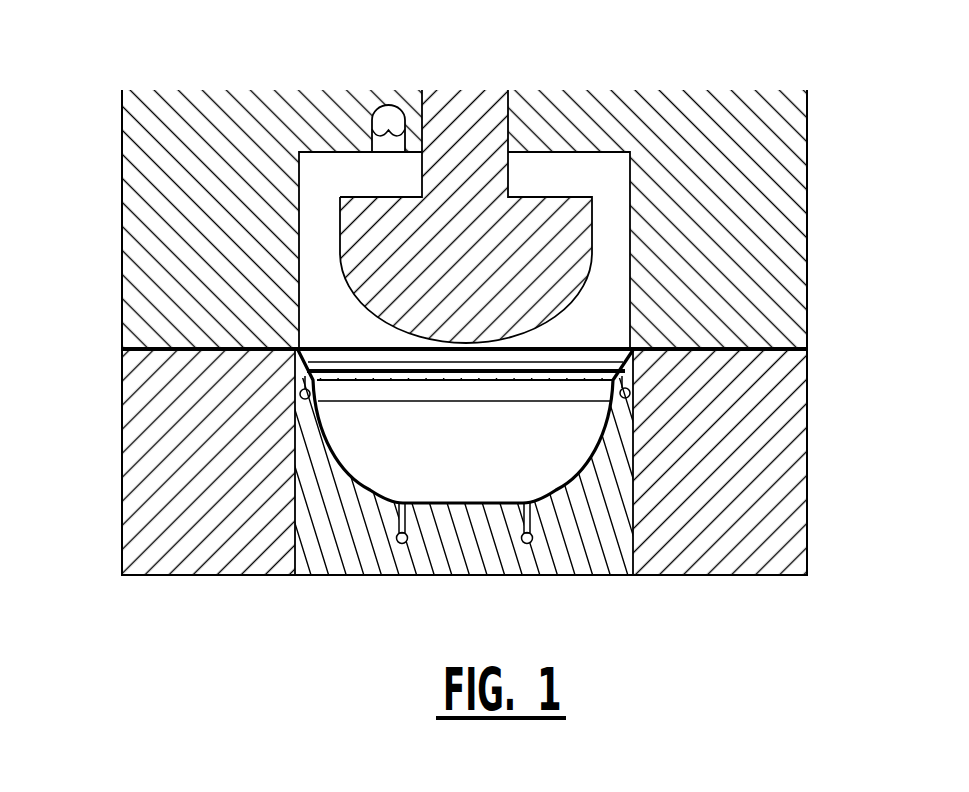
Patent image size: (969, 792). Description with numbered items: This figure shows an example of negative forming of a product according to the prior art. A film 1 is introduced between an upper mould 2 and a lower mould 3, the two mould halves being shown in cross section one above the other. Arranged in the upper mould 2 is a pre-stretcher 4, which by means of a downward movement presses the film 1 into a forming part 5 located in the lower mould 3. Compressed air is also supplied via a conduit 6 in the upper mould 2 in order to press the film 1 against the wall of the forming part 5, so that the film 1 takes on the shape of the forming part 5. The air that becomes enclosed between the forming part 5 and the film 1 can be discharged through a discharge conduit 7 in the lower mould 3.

The film 1 is at (763, 347).
The upper mould 2 is at (767, 167).
The lower mould 3 is at (772, 468).
The pre-stretcher 4 is at (360, 248).
The forming part 5 is at (358, 520).
The conduit 6 is at (385, 113).
The discharge conduit 7 is at (532, 537).